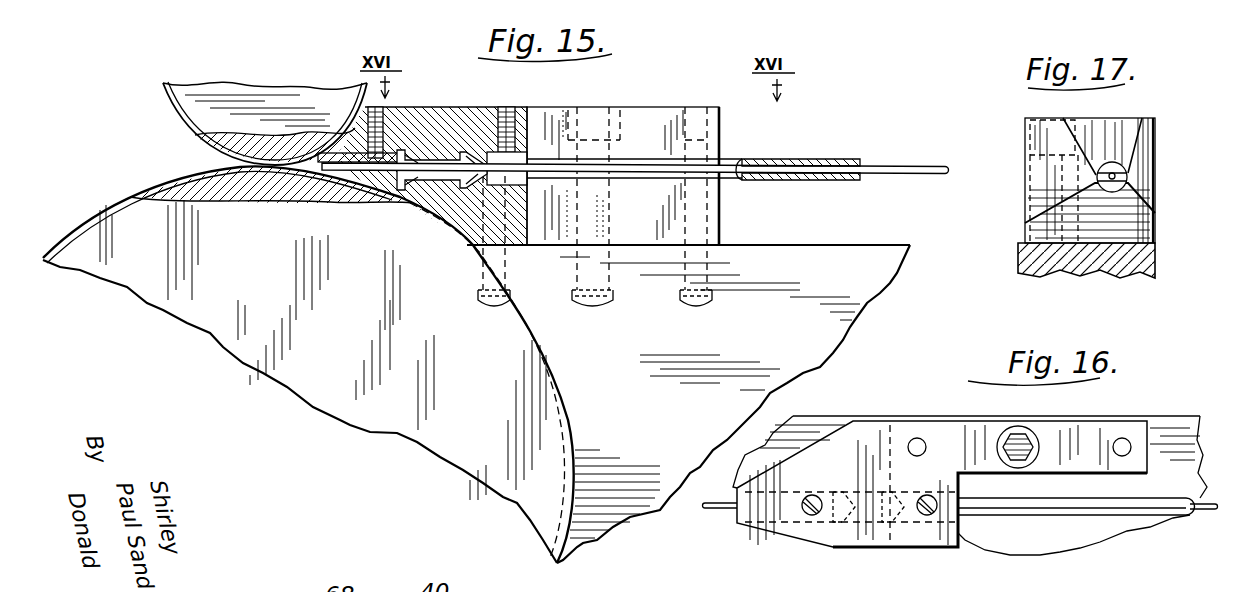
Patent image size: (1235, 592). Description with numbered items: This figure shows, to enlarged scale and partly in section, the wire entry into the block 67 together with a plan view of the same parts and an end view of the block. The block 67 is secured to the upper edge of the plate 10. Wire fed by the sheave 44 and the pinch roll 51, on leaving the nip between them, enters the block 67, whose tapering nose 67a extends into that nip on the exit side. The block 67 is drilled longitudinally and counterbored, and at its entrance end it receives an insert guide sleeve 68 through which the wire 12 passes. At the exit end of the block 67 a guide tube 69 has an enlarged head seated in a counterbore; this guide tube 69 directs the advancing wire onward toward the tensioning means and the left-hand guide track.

In FIG. 15, the plate 10 is at (822, 246).
In FIG. 17, the plate 10 is at (1140, 268).
In FIG. 16, the plate 10 is at (1175, 425).
In FIG. 15, the wire 12 is at (903, 165).
In FIG. 17, the wire 12 is at (1115, 178).
In FIG. 16, the wire 12 is at (712, 510).
In FIG. 15, the sheave 44 is at (298, 358).
In FIG. 15, the pinch roll 51 is at (175, 118).
In FIG. 15, the block 67 is at (463, 110).
In FIG. 17, the block 67 is at (1163, 190).
In FIG. 16, the block 67 is at (936, 554).
In FIG. 17, the tapering nose 67a is at (1142, 170).
In FIG. 16, the tapering nose 67a is at (763, 537).
In FIG. 15, the insert guide sleeve 68 is at (393, 153).
In FIG. 17, the insert guide sleeve 68 is at (1100, 162).
In FIG. 16, the insert guide sleeve 68 is at (816, 493).
In FIG. 15, the guide tube 69 is at (738, 159).
In FIG. 16, the guide tube 69 is at (1037, 517).